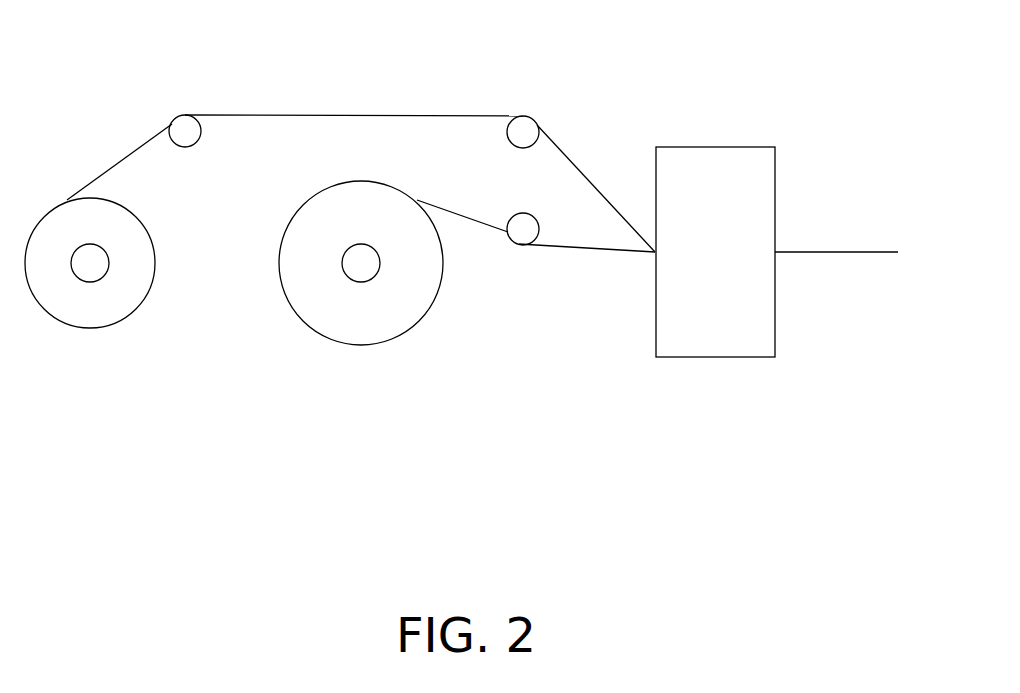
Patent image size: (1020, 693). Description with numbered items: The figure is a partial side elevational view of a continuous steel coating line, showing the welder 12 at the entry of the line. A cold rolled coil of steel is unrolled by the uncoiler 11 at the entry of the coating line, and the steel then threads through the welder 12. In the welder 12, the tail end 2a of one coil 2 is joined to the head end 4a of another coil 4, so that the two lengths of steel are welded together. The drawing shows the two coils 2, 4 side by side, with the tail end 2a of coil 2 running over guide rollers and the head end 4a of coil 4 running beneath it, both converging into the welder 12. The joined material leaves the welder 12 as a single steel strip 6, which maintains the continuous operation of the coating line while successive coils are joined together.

The uncoiler 11 is at (162, 64).
The coil 2 is at (82, 303).
The coil 4 is at (346, 303).
The tail end 2a is at (577, 168).
The head end 4a is at (568, 245).
The welder 12 is at (775, 170).
The steel strip 6 is at (828, 252).